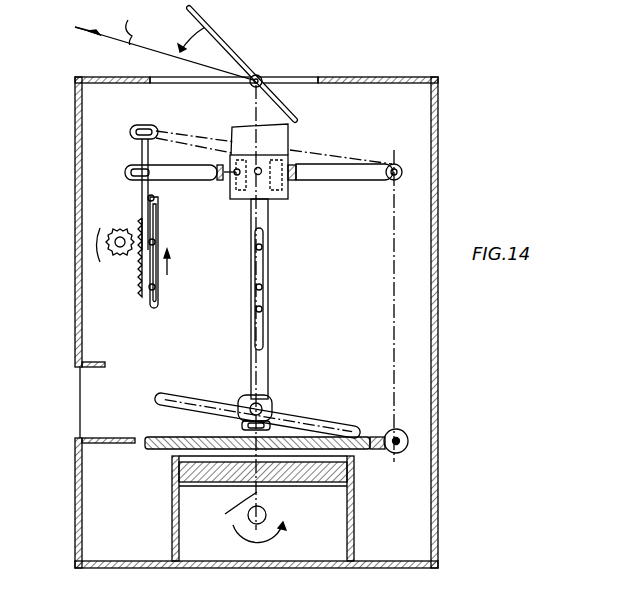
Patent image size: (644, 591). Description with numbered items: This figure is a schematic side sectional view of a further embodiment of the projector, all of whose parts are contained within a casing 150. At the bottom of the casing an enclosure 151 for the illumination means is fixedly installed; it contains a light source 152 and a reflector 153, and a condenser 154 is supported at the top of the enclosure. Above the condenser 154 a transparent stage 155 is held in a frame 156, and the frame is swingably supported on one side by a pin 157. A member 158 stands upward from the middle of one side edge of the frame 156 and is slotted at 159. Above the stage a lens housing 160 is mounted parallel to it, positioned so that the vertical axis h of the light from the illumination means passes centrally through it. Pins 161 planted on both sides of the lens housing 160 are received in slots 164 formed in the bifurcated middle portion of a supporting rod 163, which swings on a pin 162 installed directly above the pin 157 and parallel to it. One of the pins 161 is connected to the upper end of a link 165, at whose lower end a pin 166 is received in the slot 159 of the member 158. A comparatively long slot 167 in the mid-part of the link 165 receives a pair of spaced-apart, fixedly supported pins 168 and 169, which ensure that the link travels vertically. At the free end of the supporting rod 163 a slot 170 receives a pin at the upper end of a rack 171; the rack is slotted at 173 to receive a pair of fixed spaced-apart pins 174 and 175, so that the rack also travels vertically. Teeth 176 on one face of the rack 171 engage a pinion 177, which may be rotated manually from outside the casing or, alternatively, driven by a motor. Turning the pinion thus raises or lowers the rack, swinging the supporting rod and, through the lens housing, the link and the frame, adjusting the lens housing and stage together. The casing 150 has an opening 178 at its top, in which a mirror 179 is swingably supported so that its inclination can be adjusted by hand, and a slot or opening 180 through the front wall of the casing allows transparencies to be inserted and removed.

The casing 150 is at (438, 309).
The enclosure 151 is at (355, 492).
The light source 152 is at (266, 512).
The reflector 153 is at (285, 515).
The condenser 154 is at (192, 484).
The transparent stage 155 is at (160, 440).
The frame 156 is at (150, 452).
The pin 157 is at (408, 441).
The member 158 is at (243, 400).
The slot 159 is at (215, 405).
The lens housing 160 is at (280, 199).
The pins 161 is at (262, 168).
The pin 162 is at (402, 172).
The supporting rod 163 is at (345, 180).
The slots 164 is at (242, 198).
The link 165 is at (269, 365).
The pin 166 is at (272, 420).
The slot 167 is at (264, 310).
The pin 168 is at (264, 286).
The pin 169 is at (264, 247).
The slot 170 is at (125, 173).
The rack 171 is at (160, 216).
The slot 173 is at (156, 287).
The pin 174 is at (155, 242).
The pin 175 is at (160, 148).
The teeth 176 is at (137, 282).
The pinion 177 is at (108, 250).
The opening 178 is at (155, 78).
The mirror 179 is at (230, 35).
The slot or opening 180 is at (80, 405).